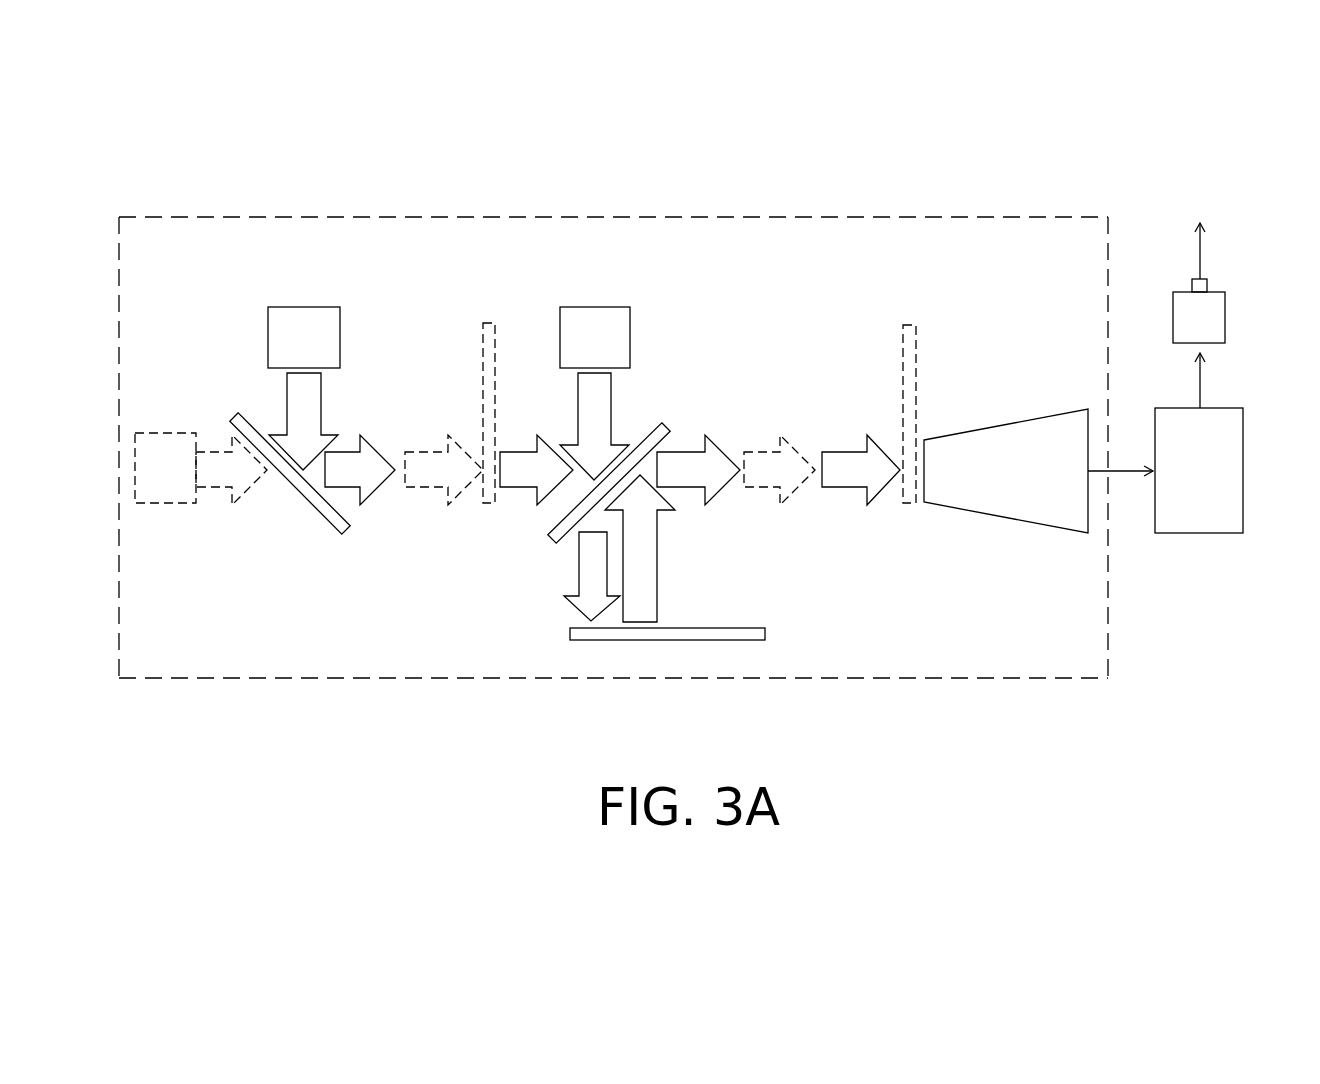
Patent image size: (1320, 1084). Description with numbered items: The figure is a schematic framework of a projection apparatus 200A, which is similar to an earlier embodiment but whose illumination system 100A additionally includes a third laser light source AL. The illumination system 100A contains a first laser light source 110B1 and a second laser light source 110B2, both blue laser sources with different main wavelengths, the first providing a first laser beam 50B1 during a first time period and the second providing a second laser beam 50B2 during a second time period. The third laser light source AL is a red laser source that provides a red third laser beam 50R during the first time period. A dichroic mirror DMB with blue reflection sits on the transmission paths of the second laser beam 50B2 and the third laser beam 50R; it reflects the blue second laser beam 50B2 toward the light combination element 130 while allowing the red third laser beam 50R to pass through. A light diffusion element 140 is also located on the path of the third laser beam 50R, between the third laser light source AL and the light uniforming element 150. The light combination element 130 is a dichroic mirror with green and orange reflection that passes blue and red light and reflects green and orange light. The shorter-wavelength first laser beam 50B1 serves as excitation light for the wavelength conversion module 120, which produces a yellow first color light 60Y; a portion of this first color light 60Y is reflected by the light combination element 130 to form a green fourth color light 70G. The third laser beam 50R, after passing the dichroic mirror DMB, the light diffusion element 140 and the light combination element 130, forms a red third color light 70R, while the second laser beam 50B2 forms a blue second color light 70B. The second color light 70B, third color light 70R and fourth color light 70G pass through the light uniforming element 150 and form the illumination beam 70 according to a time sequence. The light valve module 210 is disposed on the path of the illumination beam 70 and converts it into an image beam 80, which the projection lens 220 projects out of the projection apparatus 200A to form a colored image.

The illumination system 100A is at (973, 215).
The projection apparatus 200A is at (1262, 675).
The third laser light source AL is at (158, 432).
The third laser beam 50R is at (225, 490).
The second laser light source 110B2 is at (297, 317).
The second laser beam 50B2 is at (312, 412).
The dichroic mirror DMB is at (307, 493).
The light diffusion element 140 is at (490, 325).
The first laser light source 110B1 is at (593, 315).
The first laser beam 50B1 is at (580, 400).
The first color light 60Y is at (647, 570).
The light combination element 130 is at (550, 537).
The wavelength conversion module 120 is at (748, 628).
The fourth color light 70G is at (690, 457).
The third color light 70R is at (760, 487).
The second color light 70B is at (835, 478).
The light uniforming element 150 is at (1015, 503).
The illumination beam 70 is at (1117, 473).
The light valve module 210 is at (1245, 463).
The image beam 80 is at (1202, 382).
The projection lens 220 is at (1232, 318).